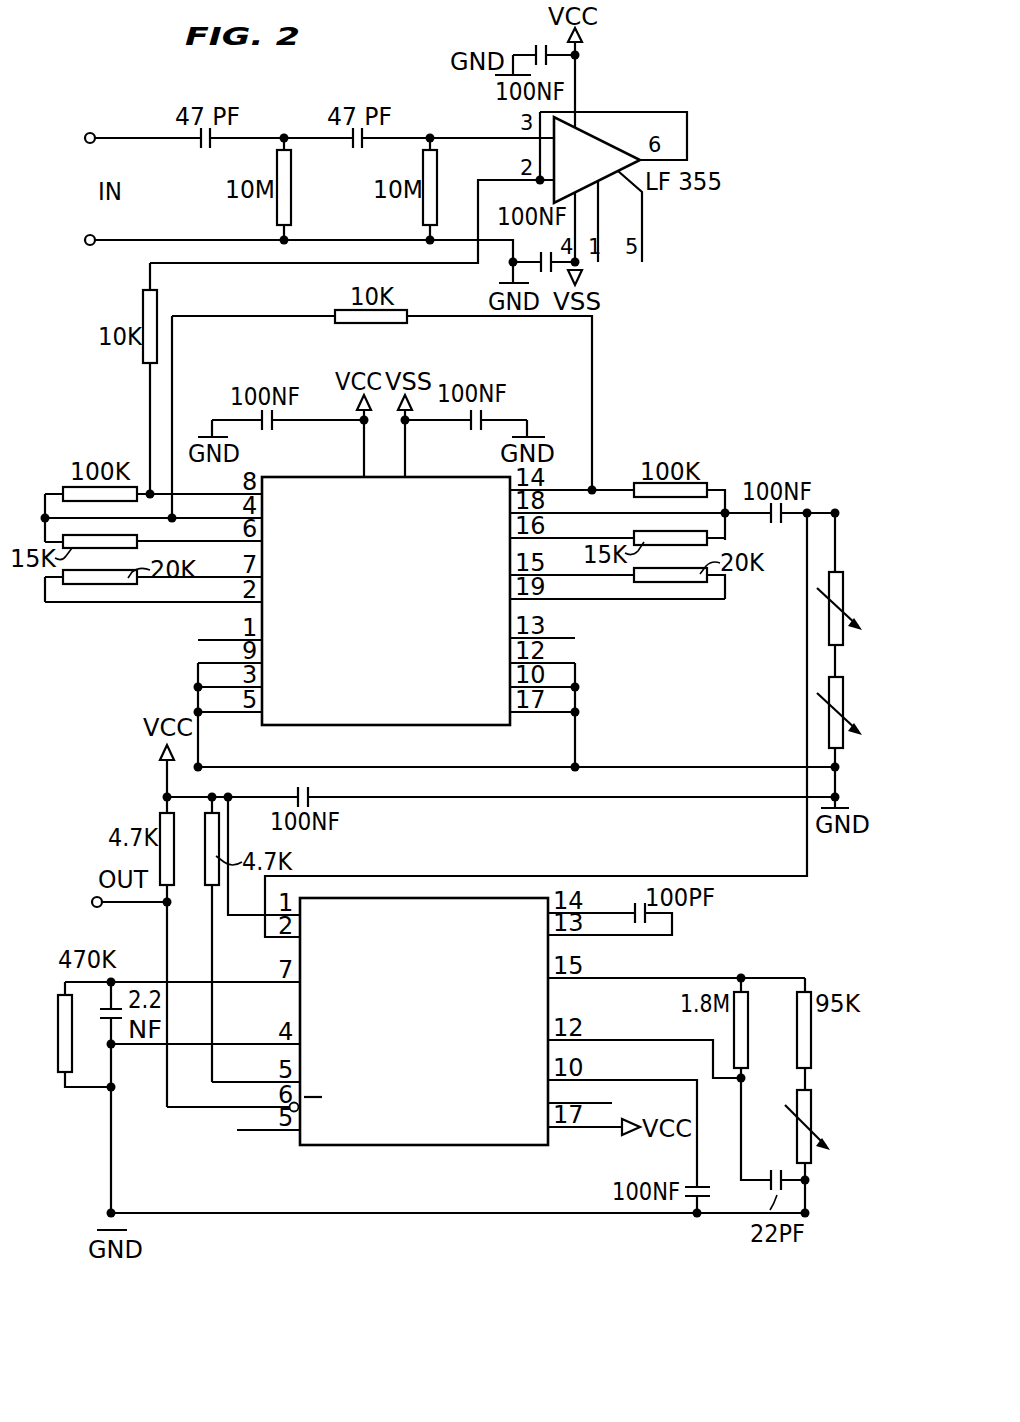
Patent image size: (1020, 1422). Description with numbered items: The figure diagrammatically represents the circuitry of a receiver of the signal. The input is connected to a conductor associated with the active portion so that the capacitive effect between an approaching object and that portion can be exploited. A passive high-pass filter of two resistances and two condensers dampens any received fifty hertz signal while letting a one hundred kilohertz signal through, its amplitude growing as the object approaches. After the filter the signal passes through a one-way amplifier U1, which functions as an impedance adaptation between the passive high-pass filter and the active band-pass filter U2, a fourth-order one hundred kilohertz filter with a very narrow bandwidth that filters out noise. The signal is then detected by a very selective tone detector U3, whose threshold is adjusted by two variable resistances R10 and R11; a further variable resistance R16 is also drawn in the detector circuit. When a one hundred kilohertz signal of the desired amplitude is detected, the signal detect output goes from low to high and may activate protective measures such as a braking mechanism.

The LF 355 operational amplifier U1 is at (597, 160).
The MAX 274 filter integrated circuit U2 is at (386, 617).
The XR 2211 FSK demodulator integrated circuit U3 is at (424, 1038).
The variable resistance R10 is at (861, 599).
The variable resistance R11 is at (862, 703).
The 10K variable resistor R16 is at (823, 1119).